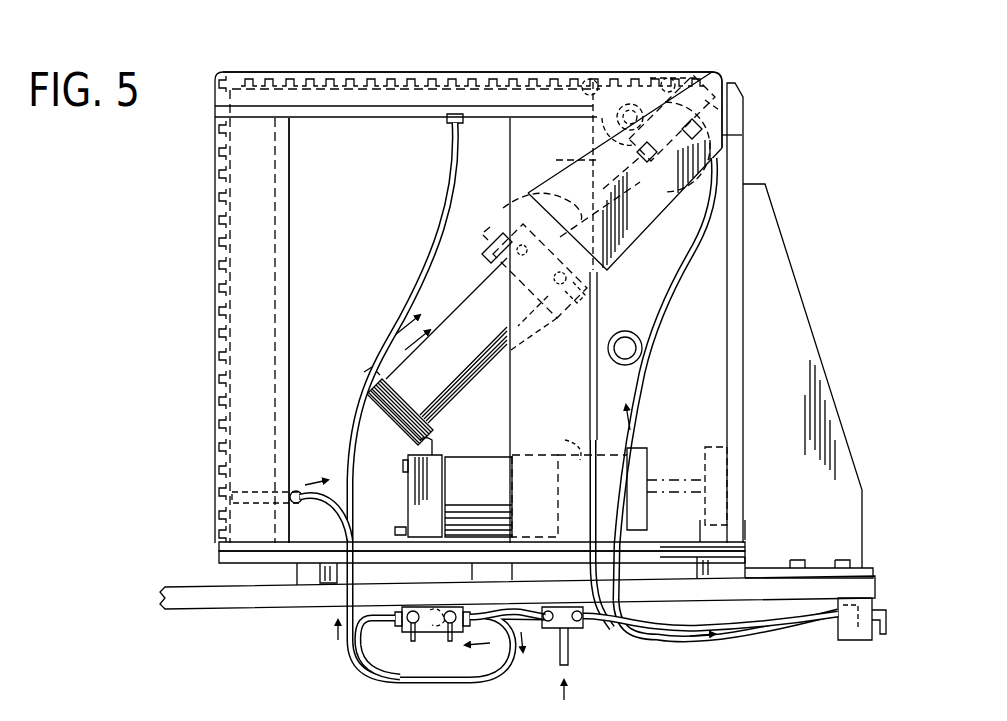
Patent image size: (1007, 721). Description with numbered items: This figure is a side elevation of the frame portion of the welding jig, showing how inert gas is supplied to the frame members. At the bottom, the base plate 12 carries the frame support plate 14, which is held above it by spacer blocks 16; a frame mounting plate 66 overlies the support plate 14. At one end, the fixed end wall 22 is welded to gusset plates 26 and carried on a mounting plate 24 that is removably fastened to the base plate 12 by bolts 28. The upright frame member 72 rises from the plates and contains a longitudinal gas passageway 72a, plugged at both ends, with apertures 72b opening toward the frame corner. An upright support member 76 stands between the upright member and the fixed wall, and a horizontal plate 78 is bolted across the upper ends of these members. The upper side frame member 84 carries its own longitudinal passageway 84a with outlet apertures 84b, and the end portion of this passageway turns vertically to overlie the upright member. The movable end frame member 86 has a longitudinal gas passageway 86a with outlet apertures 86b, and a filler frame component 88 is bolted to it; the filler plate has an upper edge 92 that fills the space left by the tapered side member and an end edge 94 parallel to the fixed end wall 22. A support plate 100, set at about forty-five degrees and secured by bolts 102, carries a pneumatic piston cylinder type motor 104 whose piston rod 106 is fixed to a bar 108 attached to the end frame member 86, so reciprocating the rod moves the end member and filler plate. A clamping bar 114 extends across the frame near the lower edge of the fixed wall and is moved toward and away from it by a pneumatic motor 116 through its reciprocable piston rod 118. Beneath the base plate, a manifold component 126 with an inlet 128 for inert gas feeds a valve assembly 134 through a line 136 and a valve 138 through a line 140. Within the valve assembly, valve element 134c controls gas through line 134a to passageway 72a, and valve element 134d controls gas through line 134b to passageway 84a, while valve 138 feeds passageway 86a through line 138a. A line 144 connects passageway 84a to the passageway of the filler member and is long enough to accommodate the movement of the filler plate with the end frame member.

The base plate 12 is at (268, 603).
The frame support plate 14 is at (218, 560).
The spacer blocks 16 is at (322, 590).
The fixed end wall 22 is at (735, 172).
The mounting plate 24 is at (873, 572).
The gusset plates 26 is at (790, 255).
The bolts 28 is at (845, 560).
The frame mounting plate 66 is at (218, 547).
The upright frame member 72 is at (262, 312).
The longitudinal gas passageway 72a is at (235, 272).
The apertures 72b is at (215, 217).
The upright support member 76 is at (575, 416).
The horizontal plate 78 is at (352, 120).
The upper side frame member 84 is at (358, 95).
The longitudinal passageway 84a is at (418, 88).
The outlet apertures 84b is at (532, 76).
The end frame member 86 is at (724, 118).
The longitudinal gas passageway 86a is at (735, 103).
The outlet apertures 86b is at (710, 70).
The filler frame component 88 is at (632, 232).
The upper edge 92 is at (690, 70).
The end edge 94 is at (735, 135).
The support plate 100 is at (590, 297).
The bolts 102 is at (485, 247).
The pneumatic piston cylinder type motor 104 is at (398, 325).
The piston rod 106 is at (503, 207).
The bar 108 is at (656, 204).
The clamping bar 114 is at (638, 448).
The pneumatic motor 116 is at (495, 450).
The reciprocable piston rod 118 is at (595, 450).
The manifold component 126 is at (575, 628).
The inlet 128 is at (570, 662).
The valve assembly 134 is at (413, 642).
The line 134a is at (340, 470).
The line 134b is at (450, 165).
The valve element 134c is at (375, 660).
The valve element 134d is at (451, 642).
The line 136 is at (515, 655).
The valve 138 is at (868, 640).
The line 138a is at (645, 340).
The line 140 is at (640, 636).
The line 144 is at (556, 160).